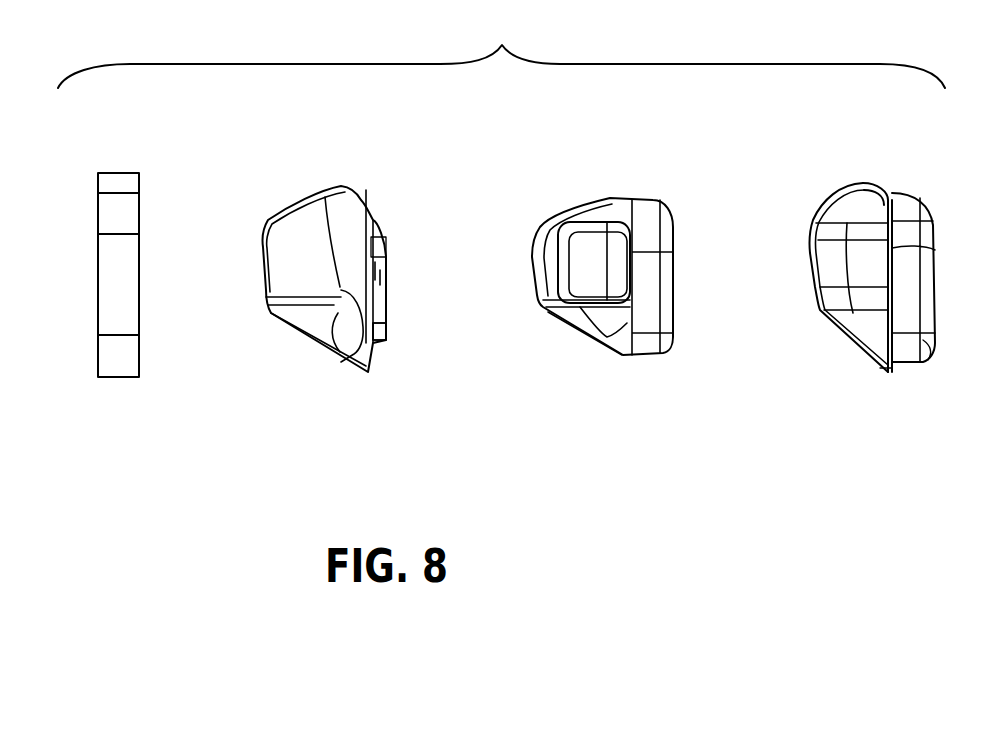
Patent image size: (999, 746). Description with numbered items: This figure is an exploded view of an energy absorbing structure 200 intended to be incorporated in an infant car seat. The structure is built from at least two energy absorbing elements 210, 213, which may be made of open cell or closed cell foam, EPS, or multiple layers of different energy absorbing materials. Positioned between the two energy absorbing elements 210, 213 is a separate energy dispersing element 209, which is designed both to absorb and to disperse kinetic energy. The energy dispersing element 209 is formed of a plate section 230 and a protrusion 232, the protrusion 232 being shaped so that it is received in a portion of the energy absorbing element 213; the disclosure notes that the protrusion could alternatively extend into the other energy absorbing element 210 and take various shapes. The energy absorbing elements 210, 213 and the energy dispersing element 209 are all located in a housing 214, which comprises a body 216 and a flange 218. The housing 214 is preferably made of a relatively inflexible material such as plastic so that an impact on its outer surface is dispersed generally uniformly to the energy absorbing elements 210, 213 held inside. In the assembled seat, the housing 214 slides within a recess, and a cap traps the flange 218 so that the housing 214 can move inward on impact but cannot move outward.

The energy absorbing structure 200 is at (501, 52).
The energy absorbing element 210 is at (122, 192).
The energy dispersing element 209 is at (352, 195).
The protrusion 232 is at (381, 295).
The plate section 230 is at (377, 343).
The energy absorbing element 213 is at (645, 273).
The housing 214 is at (941, 253).
The body 216 is at (933, 340).
The flange 218 is at (880, 373).